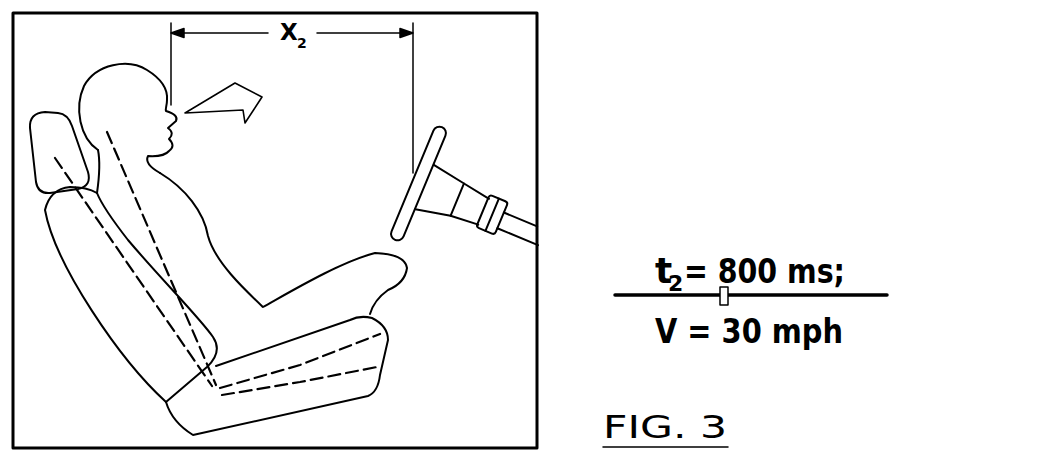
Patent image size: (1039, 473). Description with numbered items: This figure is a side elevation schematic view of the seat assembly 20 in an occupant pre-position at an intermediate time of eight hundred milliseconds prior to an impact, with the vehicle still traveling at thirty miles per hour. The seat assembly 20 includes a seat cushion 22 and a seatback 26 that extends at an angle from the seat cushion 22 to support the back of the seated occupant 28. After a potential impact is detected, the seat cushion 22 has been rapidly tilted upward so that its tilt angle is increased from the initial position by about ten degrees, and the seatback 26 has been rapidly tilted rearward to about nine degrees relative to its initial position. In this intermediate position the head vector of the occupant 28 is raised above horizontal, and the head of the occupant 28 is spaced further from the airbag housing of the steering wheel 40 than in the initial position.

The seat assembly 20 is at (81, 72).
The seat cushion 22 is at (358, 341).
The seatback 26 is at (120, 251).
The occupant 28 is at (213, 238).
The steering wheel 40 is at (442, 123).